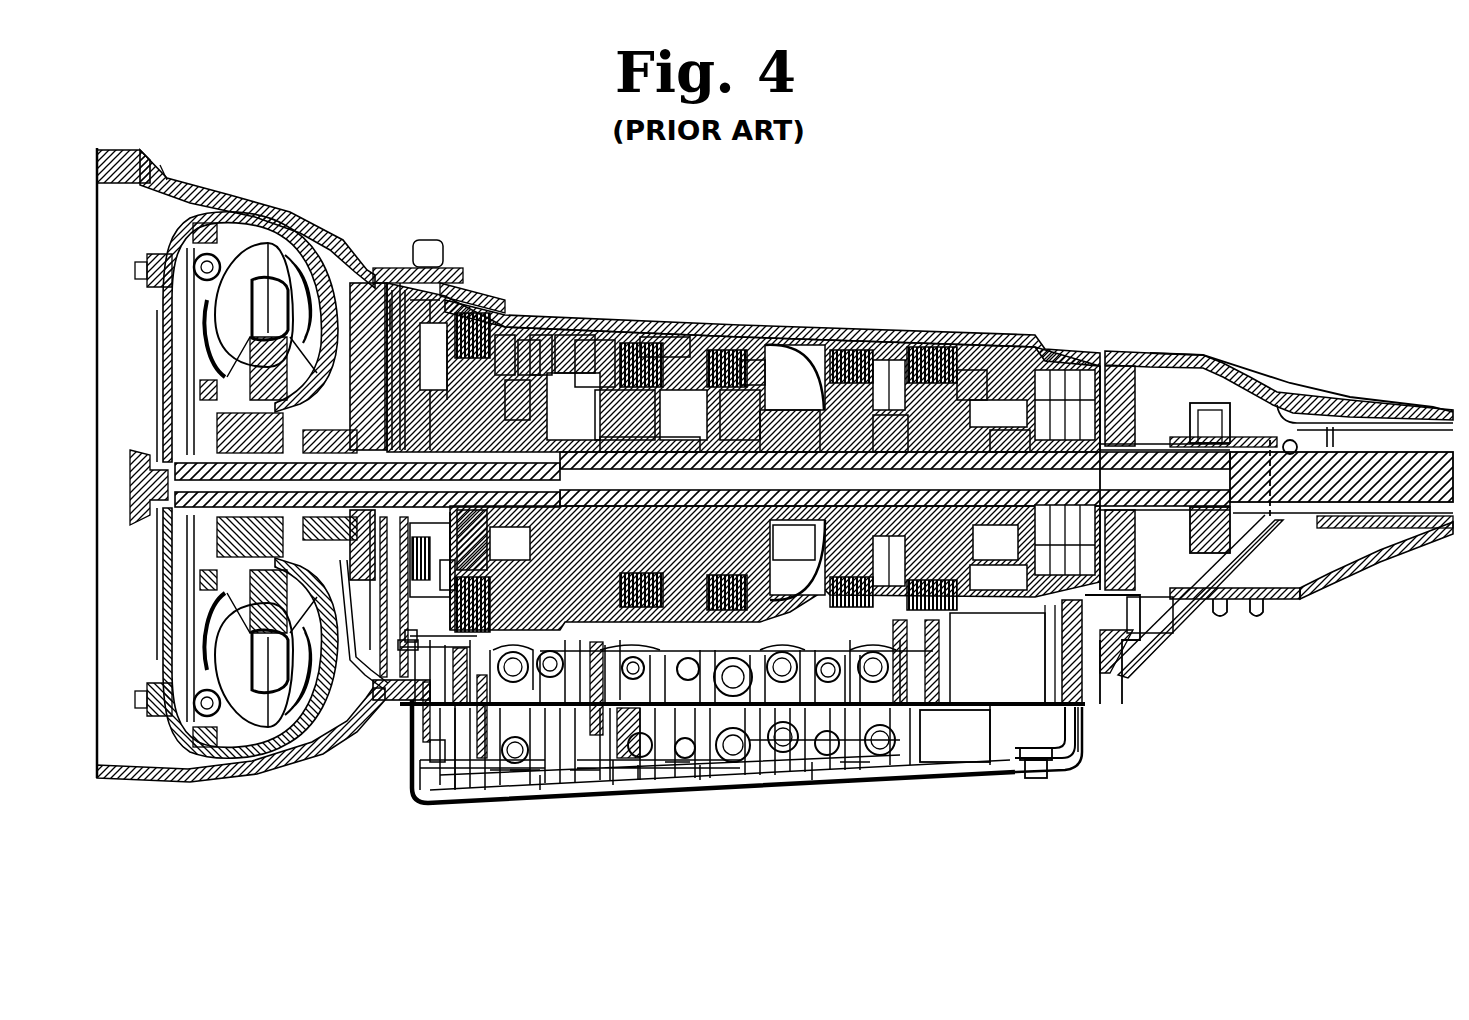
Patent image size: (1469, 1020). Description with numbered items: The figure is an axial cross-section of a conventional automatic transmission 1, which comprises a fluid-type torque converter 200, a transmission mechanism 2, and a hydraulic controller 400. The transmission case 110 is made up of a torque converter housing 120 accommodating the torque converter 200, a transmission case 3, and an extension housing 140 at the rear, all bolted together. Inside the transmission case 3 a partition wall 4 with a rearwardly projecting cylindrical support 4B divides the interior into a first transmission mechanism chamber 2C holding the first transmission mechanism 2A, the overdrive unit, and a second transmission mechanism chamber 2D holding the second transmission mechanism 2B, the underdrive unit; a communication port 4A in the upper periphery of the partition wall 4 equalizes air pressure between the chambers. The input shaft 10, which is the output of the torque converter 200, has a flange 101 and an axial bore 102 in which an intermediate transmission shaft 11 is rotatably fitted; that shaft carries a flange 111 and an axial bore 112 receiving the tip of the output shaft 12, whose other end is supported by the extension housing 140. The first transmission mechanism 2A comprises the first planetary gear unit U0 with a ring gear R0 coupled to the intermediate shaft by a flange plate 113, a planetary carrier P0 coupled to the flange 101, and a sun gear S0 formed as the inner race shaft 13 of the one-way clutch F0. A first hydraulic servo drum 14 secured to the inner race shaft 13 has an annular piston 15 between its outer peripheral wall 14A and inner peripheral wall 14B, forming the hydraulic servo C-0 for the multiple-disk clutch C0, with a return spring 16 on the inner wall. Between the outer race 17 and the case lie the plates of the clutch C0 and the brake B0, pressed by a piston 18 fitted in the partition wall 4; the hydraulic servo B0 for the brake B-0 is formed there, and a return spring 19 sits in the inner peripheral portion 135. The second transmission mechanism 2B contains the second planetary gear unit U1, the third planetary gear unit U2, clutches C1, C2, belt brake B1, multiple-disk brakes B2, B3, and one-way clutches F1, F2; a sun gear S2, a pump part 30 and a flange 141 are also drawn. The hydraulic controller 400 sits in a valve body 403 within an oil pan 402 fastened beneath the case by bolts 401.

The automatic transmission 1 is at (238, 164).
The transmission mechanism 2 is at (1029, 786).
The first transmission mechanism 2A is at (430, 767).
The second transmission mechanism 2B is at (613, 783).
The first transmission mechanism chamber 2C is at (493, 780).
The second transmission mechanism chamber 2D is at (812, 780).
The transmission case 3 is at (683, 323).
The partition wall 4 is at (610, 333).
The communication port 4A is at (597, 333).
The cylindrical support 4B is at (652, 330).
The input shaft 10 is at (345, 333).
The intermediate transmission shaft 11 is at (638, 780).
The output shaft 12 is at (1148, 453).
The inner race shaft 13 is at (452, 588).
The first hydraulic servo drum 14 is at (397, 307).
The outer peripheral wall 14A is at (447, 333).
The inner peripheral wall 14B is at (473, 333).
The annular piston 15 is at (403, 333).
The return spring 16 is at (403, 650).
The outer race 17 is at (463, 780).
The piston 18 is at (560, 333).
The return spring 19 is at (517, 783).
The oil pump 30 is at (408, 327).
The flange 101 is at (490, 775).
The axial bore 102 is at (408, 643).
The transmission case 110 is at (348, 724).
The flange 111 is at (700, 780).
The axial bore 112 is at (740, 357).
The flange plate 113 is at (542, 780).
The torque converter housing 120 is at (190, 780).
The inner peripheral portion 135 is at (577, 780).
The extension housing 140 is at (1230, 377).
The pump housing flange 141 is at (390, 330).
The torque converter 200 is at (165, 746).
The hydraulic controller 400 is at (670, 780).
The bolts 401 is at (1103, 707).
The oil pan 402 is at (1078, 707).
The valve body 403 is at (851, 768).
The hydraulic servo C-0 is at (440, 290).
The brake B-0 is at (580, 333).
The brake B0 is at (483, 333).
The multiple-disk clutch C0 is at (497, 333).
The sun gear S0 is at (507, 333).
The planetary carrier P0 is at (520, 333).
The ring gear R0 is at (533, 333).
The one-way clutch F0 is at (440, 765).
The belt brake B1 is at (695, 355).
The multiple-disk brake B2 is at (835, 357).
The multiple-disk brake B3 is at (923, 357).
The multiple-disk clutch C1 is at (762, 357).
The multiple-disk clutch C2 is at (727, 357).
The one-way clutch F1 is at (868, 357).
The one-way clutch F2 is at (965, 357).
The sun gear S2 is at (998, 357).
The first planetary gear unit U0 is at (510, 543).
The second planetary gear unit U1 is at (794, 542).
The third planetary gear unit U2 is at (995, 542).